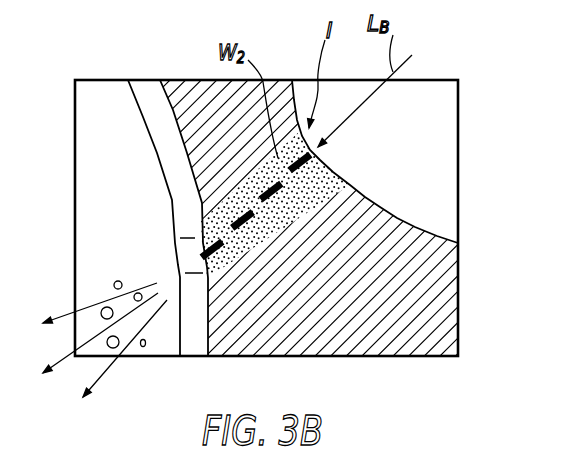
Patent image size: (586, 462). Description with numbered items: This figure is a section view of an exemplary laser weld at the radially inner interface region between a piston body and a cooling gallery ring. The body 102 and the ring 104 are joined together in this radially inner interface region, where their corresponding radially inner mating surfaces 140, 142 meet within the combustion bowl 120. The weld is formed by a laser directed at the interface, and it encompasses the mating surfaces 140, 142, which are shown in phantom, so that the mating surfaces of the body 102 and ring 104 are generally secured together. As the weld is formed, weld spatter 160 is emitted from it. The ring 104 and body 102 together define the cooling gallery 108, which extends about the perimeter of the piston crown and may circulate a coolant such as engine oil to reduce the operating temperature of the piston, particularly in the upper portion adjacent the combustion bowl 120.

The body 102 is at (327, 308).
The ring 104 is at (207, 102).
The cooling gallery 108 is at (138, 208).
The combustion bowl 120 is at (362, 195).
The radially inner mating surface 140 is at (244, 222).
The radially inner mating surface 142 is at (262, 186).
The weld spatter 160 is at (115, 375).